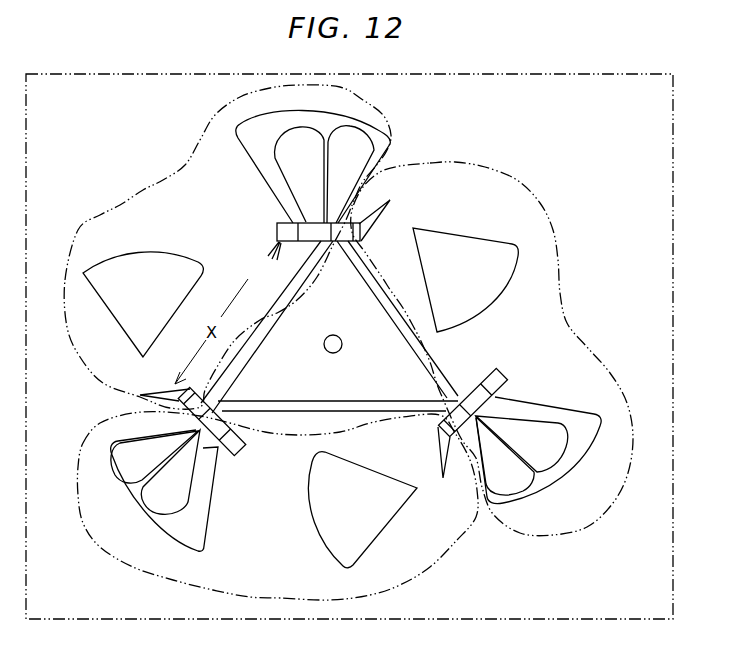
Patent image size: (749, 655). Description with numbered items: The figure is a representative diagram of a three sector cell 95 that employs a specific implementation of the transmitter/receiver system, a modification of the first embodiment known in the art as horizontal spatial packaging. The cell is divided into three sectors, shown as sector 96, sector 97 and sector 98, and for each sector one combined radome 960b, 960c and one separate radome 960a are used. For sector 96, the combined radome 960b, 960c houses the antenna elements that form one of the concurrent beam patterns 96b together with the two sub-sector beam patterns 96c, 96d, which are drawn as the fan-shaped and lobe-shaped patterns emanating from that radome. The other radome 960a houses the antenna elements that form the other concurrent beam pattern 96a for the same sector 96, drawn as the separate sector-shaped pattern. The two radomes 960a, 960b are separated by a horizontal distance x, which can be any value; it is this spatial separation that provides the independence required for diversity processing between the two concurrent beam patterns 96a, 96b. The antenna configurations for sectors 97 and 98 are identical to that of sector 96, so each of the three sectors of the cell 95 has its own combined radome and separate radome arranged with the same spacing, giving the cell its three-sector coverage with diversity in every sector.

The three sector cell 95 is at (673, 108).
The sector 96 is at (115, 207).
The concurrent beam pattern 96a is at (98, 300).
The concurrent beam pattern 96b is at (244, 146).
The sub-sector beam pattern 96c is at (282, 172).
The sub-sector beam pattern 96d is at (387, 128).
The separate radome 960a is at (158, 392).
The combined radome 960b is at (277, 232).
The combined radome 960c is at (307, 242).
The sector 97 is at (558, 250).
The sector 98 is at (83, 443).